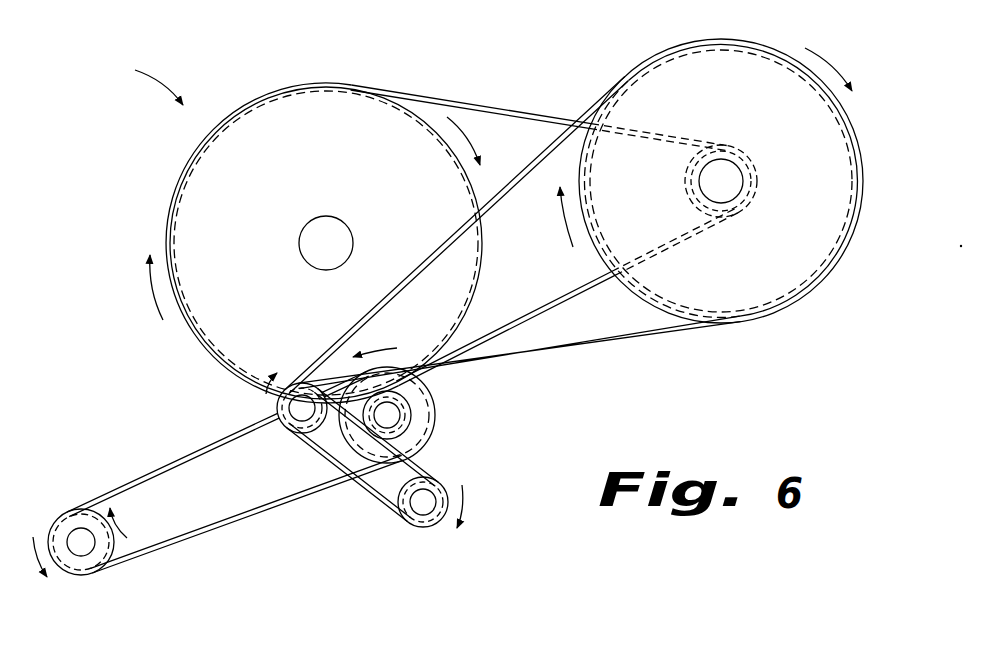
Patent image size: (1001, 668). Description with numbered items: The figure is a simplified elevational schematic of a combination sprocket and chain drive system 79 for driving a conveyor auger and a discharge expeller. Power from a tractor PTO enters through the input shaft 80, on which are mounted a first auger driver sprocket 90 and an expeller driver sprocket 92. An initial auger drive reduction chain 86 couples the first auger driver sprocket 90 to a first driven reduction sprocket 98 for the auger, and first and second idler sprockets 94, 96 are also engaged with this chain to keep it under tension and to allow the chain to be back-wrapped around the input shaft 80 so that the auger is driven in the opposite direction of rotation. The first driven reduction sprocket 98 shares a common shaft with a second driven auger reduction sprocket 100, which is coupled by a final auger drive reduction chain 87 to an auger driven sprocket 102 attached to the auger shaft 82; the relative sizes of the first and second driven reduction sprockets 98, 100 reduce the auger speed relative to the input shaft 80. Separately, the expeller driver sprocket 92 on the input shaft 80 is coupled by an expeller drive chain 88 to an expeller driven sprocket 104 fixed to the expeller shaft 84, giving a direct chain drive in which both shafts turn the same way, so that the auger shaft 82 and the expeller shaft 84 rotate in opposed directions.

The sprocket and chain drive system 79 is at (136, 79).
The input shaft 80 is at (390, 415).
The auger shaft 82 is at (312, 244).
The expeller shaft 84 is at (84, 545).
The initial auger drive reduction chain 86 is at (616, 348).
The final auger drive reduction chain 87 is at (499, 108).
The expeller drive chain 88 is at (246, 516).
The first auger driver sprocket 90 is at (410, 420).
The expeller driver sprocket 92 is at (433, 391).
The first idler sprocket 94 is at (421, 522).
The second idler sprocket 96 is at (256, 434).
The first driven reduction sprocket 98 is at (657, 88).
The second driven auger reduction sprocket 100 is at (725, 143).
The auger driven sprocket 102 is at (218, 165).
The expeller driven sprocket 104 is at (73, 520).